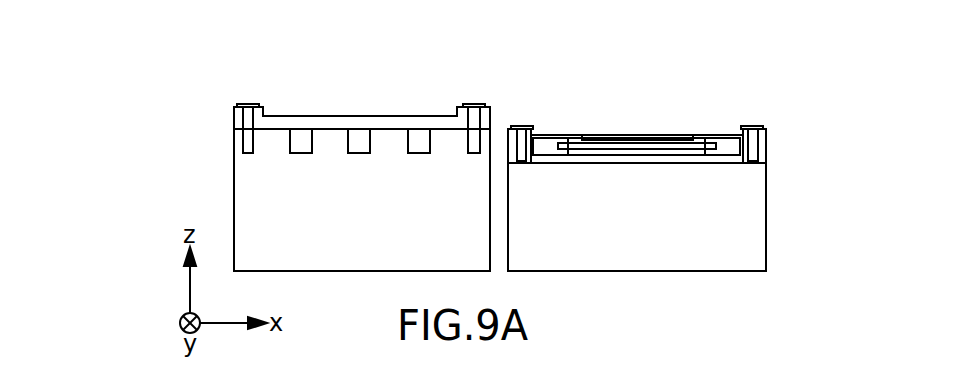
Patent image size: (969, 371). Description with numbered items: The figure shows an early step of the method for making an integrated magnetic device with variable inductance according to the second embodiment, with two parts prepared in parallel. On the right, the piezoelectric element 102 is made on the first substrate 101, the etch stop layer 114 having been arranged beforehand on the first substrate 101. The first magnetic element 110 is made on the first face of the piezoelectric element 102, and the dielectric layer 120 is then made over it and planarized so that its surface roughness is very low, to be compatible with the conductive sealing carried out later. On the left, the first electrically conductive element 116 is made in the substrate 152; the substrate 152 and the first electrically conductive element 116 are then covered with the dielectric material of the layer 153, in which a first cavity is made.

The first substrate 101 is at (757, 230).
The piezoelectric element 102 is at (668, 143).
The first magnetic element 110 is at (610, 140).
The etch stop layer 114 is at (609, 163).
The first electrically conductive element 116 is at (360, 140).
The dielectric layer 120 is at (698, 137).
The substrate 152 is at (240, 165).
The layer 153 is at (306, 123).